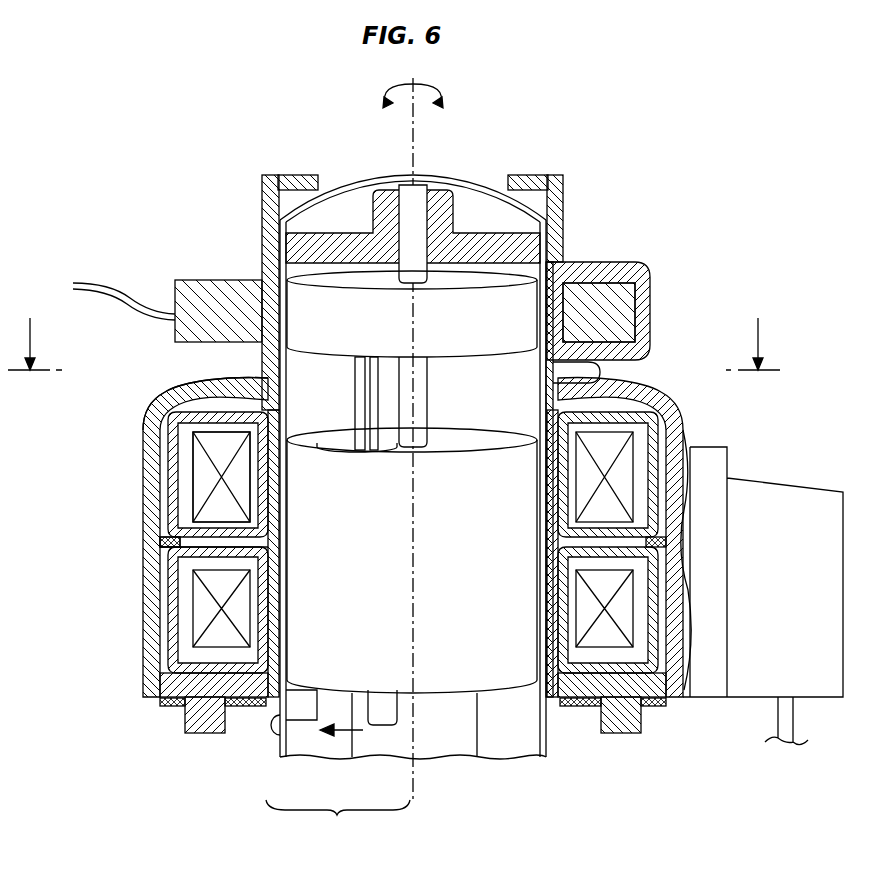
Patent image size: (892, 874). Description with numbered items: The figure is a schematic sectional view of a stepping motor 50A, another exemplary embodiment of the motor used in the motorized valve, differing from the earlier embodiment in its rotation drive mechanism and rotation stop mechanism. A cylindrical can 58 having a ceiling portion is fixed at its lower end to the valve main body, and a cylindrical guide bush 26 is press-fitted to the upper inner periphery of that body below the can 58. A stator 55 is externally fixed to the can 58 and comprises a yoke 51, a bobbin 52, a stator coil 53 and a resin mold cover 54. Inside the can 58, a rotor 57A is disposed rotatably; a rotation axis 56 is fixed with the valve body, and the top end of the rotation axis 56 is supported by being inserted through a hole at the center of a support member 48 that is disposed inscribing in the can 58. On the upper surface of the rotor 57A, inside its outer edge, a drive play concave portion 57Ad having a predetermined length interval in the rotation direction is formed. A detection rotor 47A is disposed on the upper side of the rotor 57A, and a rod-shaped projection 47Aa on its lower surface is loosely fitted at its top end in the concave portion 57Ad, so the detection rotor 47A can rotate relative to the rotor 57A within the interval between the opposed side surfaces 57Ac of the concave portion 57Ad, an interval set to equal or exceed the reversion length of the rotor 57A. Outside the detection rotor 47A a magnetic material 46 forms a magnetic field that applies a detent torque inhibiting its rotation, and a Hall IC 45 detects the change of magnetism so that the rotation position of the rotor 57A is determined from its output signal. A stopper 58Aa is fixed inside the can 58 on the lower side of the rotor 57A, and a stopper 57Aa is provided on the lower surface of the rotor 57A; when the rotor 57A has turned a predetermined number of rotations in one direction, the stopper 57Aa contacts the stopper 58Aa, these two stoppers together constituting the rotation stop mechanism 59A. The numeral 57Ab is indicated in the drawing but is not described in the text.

The stepping motor 50A is at (712, 197).
The can 58 is at (457, 178).
The stopper 58Aa is at (300, 716).
The support member 48 is at (383, 193).
The rotation axis 56 is at (417, 188).
The detection rotor 47A is at (507, 273).
The rod-shaped projection 47Aa is at (365, 370).
The side surface 57Ac is at (405, 456).
The rotor 57A is at (527, 587).
The concave portion 57Ad is at (358, 456).
The step portion 57Ab is at (330, 452).
The stopper 57Aa is at (381, 724).
The rotation stop mechanism 59A is at (338, 823).
The guide bush 26 is at (459, 742).
The stator 55 is at (146, 398).
The resin mold cover 54 is at (190, 382).
The stator coil 53 is at (200, 475).
The bobbin 52 is at (182, 530).
The yoke 51 is at (170, 546).
The Hall IC 45 is at (222, 277).
The magnetic material 46 is at (644, 302).